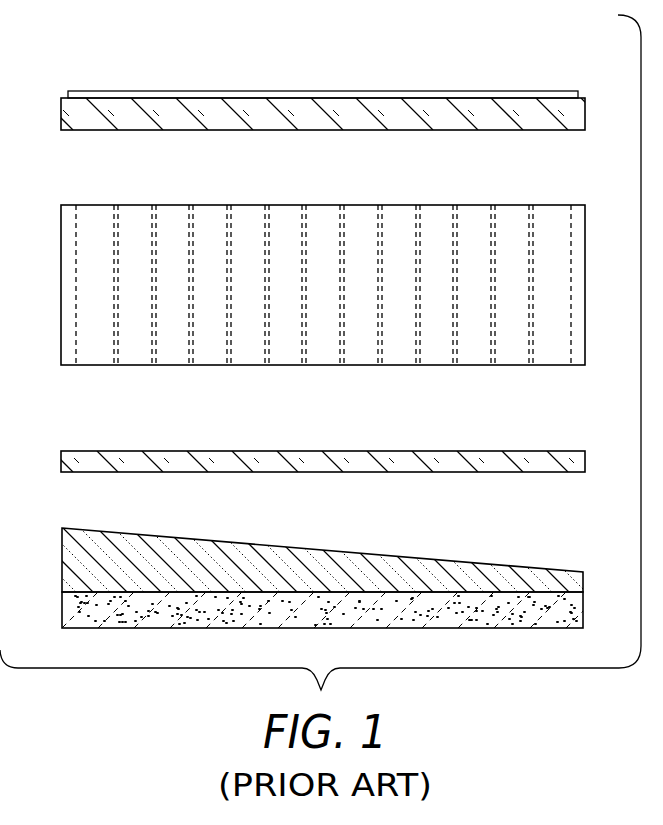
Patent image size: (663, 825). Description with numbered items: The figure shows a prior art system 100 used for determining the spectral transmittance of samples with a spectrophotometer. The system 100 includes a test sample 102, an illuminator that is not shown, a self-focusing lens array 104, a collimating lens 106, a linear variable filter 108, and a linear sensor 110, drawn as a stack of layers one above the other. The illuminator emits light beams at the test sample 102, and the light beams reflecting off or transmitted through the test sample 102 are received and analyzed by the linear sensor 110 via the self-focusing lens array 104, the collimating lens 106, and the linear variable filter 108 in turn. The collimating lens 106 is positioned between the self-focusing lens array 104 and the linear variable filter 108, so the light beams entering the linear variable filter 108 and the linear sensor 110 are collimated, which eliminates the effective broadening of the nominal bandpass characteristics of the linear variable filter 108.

The prior art system 100 is at (153, 52).
The test sample 102 is at (478, 92).
The self-focusing lens array 104 is at (480, 204).
The collimating lens 106 is at (478, 448).
The linear variable filter 108 is at (480, 562).
The linear sensor 110 is at (62, 612).